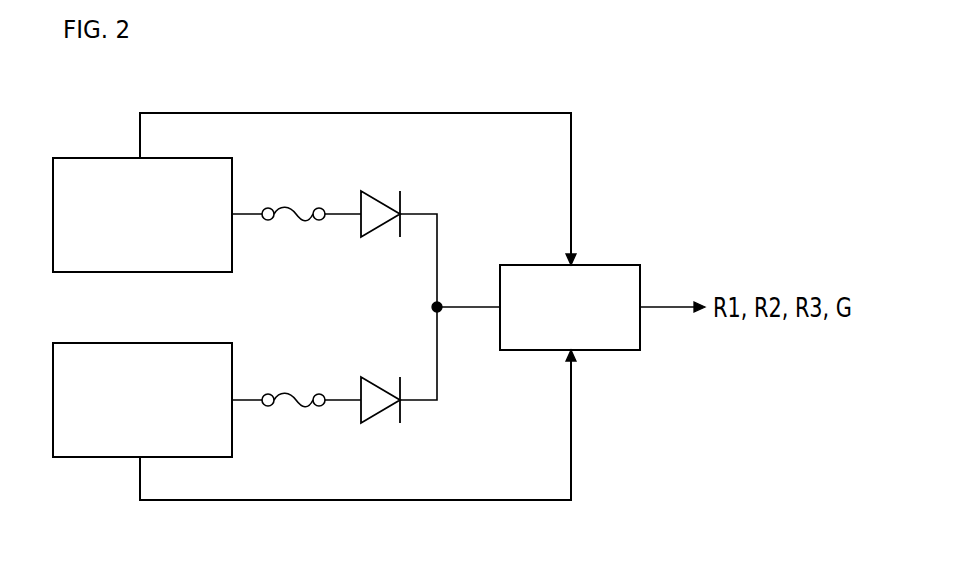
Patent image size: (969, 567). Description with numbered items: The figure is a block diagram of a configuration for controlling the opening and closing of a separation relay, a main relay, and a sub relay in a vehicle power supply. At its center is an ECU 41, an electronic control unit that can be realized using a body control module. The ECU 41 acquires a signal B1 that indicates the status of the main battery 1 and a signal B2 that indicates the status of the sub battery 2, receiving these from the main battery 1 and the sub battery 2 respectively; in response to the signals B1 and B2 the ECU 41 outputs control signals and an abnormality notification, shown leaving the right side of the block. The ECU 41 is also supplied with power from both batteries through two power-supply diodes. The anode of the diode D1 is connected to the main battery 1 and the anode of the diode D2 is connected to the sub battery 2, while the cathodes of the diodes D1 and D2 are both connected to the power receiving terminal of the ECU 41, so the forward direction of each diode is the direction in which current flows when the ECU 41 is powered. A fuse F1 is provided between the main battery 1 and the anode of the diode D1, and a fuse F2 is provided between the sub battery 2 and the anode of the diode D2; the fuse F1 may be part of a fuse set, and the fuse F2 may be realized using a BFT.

The main battery 1 is at (82, 158).
The sub battery 2 is at (83, 343).
The fuse F1 is at (299, 204).
The fuse F2 is at (299, 390).
The diode D1 is at (389, 191).
The diode D2 is at (389, 377).
The ECU 41 is at (601, 265).
The signal B1 is at (370, 187).
The signal B2 is at (371, 429).